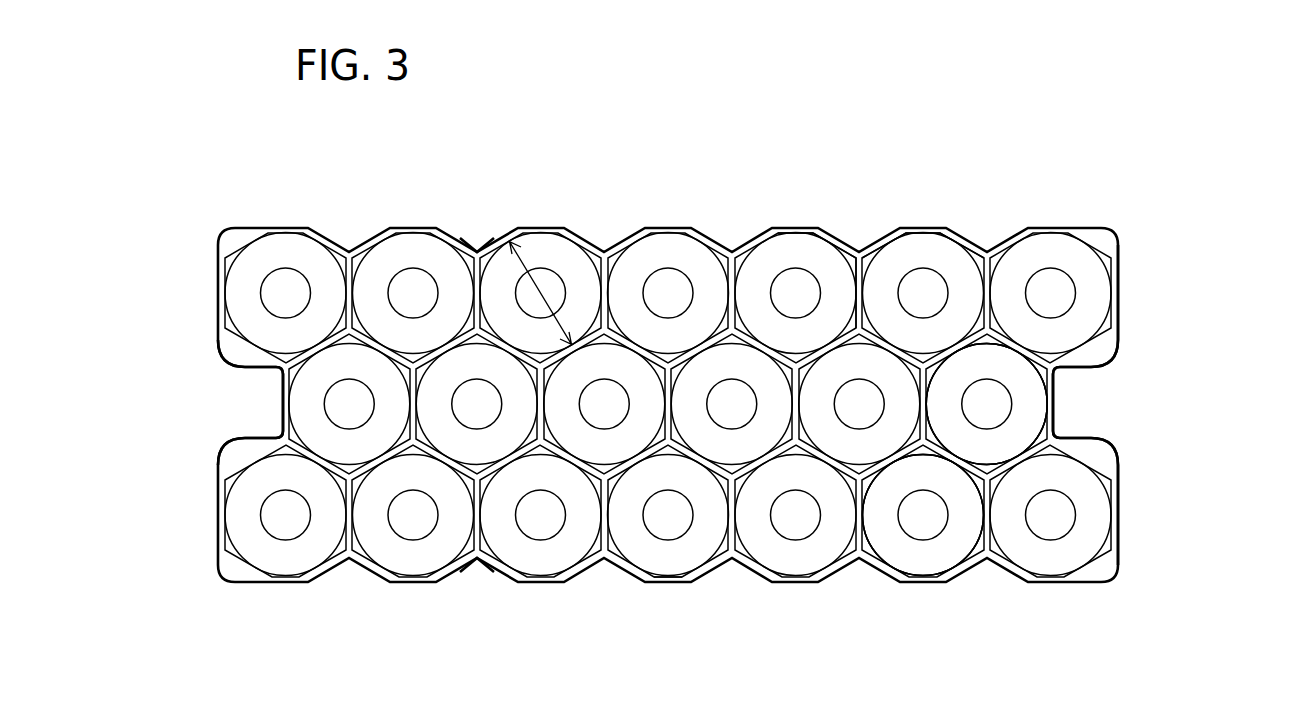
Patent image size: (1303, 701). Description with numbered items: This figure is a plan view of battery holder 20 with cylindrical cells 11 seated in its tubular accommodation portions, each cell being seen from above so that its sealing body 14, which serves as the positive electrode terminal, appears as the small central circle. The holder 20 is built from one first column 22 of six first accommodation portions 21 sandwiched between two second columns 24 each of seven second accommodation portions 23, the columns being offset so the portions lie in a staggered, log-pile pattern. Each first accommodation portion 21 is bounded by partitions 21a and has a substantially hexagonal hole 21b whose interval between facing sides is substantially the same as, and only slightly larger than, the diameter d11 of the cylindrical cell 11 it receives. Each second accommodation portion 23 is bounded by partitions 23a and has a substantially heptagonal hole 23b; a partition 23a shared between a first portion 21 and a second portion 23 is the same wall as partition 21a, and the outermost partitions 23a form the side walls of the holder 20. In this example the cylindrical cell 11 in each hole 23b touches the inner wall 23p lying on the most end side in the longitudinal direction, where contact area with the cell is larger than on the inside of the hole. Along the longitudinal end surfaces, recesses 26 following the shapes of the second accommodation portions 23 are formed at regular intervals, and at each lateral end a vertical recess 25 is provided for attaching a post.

The battery holder 20 is at (700, 369).
The first column 22 is at (1068, 411).
The second column 24 is at (1131, 297).
The recess 25 is at (1082, 388).
The second accommodation portion 23 is at (940, 133).
The partition 23a is at (916, 229).
The hole 23b is at (873, 247).
The inner wall 23p is at (808, 243).
The recess 26 is at (473, 248).
The cylindrical cell 11 is at (639, 261).
The sealing body 14 is at (672, 283).
The first accommodation portion 21 is at (950, 663).
The partition 21a is at (878, 468).
The hole 21b is at (932, 407).
The diameter of cylindrical cell d11 is at (541, 293).